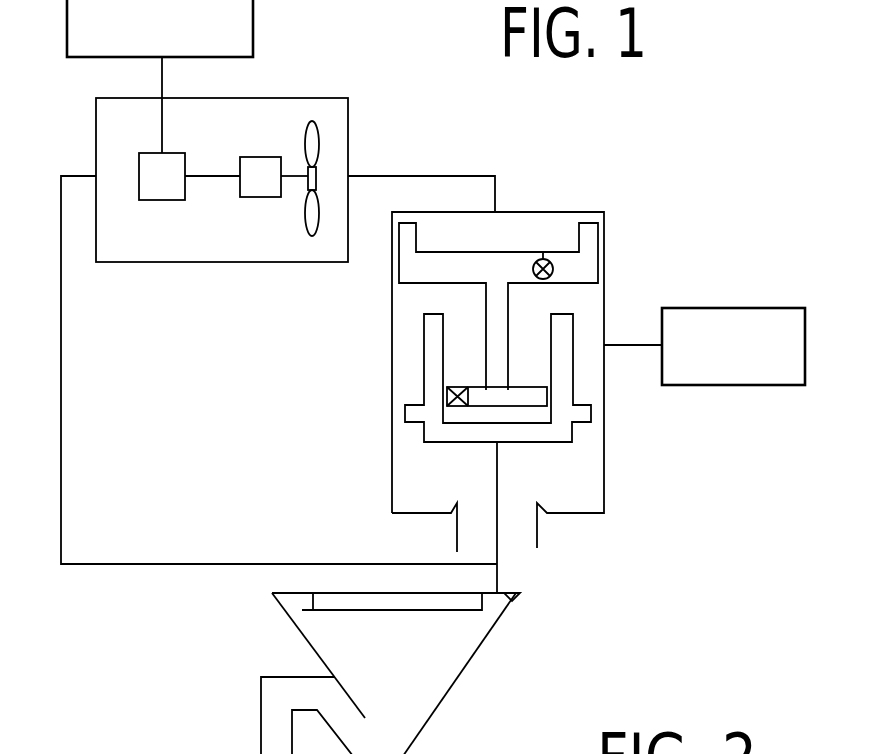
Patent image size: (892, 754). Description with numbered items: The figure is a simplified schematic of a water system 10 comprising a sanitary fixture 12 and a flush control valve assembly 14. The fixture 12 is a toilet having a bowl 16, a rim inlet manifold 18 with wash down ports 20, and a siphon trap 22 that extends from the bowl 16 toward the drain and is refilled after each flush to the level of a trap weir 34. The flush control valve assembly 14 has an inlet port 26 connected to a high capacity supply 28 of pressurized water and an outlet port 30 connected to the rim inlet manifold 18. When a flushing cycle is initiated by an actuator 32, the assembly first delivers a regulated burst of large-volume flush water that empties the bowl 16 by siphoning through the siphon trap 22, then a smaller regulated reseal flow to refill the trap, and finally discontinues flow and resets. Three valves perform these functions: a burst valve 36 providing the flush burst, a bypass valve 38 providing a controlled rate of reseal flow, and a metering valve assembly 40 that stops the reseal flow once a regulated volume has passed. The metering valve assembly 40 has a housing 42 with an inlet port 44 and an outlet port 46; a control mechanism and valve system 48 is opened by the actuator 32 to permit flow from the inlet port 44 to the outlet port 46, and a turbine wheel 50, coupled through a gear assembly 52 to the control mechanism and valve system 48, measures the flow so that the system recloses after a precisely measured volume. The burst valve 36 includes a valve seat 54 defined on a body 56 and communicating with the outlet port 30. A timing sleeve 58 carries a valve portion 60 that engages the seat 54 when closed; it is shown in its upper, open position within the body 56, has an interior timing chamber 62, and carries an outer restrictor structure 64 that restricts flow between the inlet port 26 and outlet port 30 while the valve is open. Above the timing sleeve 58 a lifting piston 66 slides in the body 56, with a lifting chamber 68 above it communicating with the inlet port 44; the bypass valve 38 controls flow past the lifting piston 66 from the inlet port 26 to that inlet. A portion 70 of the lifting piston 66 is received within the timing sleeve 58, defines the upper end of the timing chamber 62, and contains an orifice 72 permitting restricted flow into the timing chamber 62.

The water system 10 is at (672, 145).
The sanitary fixture 12 is at (461, 676).
The flush control valve assembly 14 is at (286, 354).
The bowl 16 is at (305, 640).
The rim inlet manifold 18 is at (510, 602).
The wash down ports 20 is at (292, 609).
The siphon trap 22 is at (261, 697).
The inlet port 26 is at (634, 342).
The high capacity supply of pressurized water 28 is at (807, 353).
The outlet port 30 is at (498, 578).
The actuator 32 is at (253, 32).
The trap weir 34 is at (313, 704).
The burst valve 36 is at (622, 474).
The bypass valve 38 is at (553, 270).
The metering valve assembly 40 is at (93, 121).
The housing 42 is at (197, 262).
The inlet port 44 is at (360, 176).
The outlet port 46 is at (78, 176).
The control mechanism and valve system 48 is at (160, 195).
The turbine wheel 50 is at (308, 132).
The gear assembly 52 is at (262, 190).
The valve seat 54 is at (540, 500).
The body 56 is at (392, 482).
The timing sleeve 58 is at (430, 368).
The valve portion 60 is at (477, 443).
The timing chamber 62 is at (460, 422).
The outer restrictor structure 64 is at (595, 413).
The lifting piston 66 is at (443, 265).
The lifting chamber 68 is at (542, 213).
The portion of the lifting piston 70 is at (533, 395).
The orifice 72 is at (477, 390).